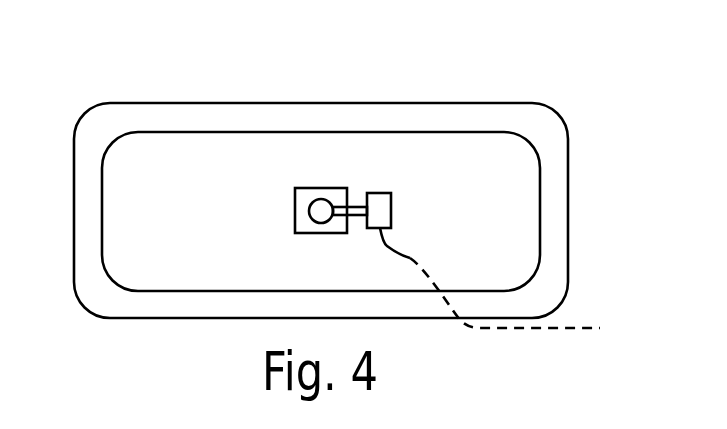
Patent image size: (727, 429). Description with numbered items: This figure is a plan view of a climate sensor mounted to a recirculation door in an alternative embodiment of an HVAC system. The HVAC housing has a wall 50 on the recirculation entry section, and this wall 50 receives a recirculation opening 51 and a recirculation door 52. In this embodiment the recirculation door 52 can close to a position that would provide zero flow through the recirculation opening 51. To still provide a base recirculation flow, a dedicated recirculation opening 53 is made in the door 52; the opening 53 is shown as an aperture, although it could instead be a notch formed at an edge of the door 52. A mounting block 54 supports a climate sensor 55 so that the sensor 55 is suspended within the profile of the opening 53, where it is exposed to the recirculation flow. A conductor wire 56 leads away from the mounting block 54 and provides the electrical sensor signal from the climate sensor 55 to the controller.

The wall 50 is at (102, 128).
The recirculation opening 51 is at (207, 132).
The recirculation door 52 is at (257, 163).
The dedicated recirculation opening 53 is at (295, 210).
The mounting block 54 is at (391, 205).
The climate sensor 55 is at (321, 199).
The conductor wire 56 is at (384, 245).